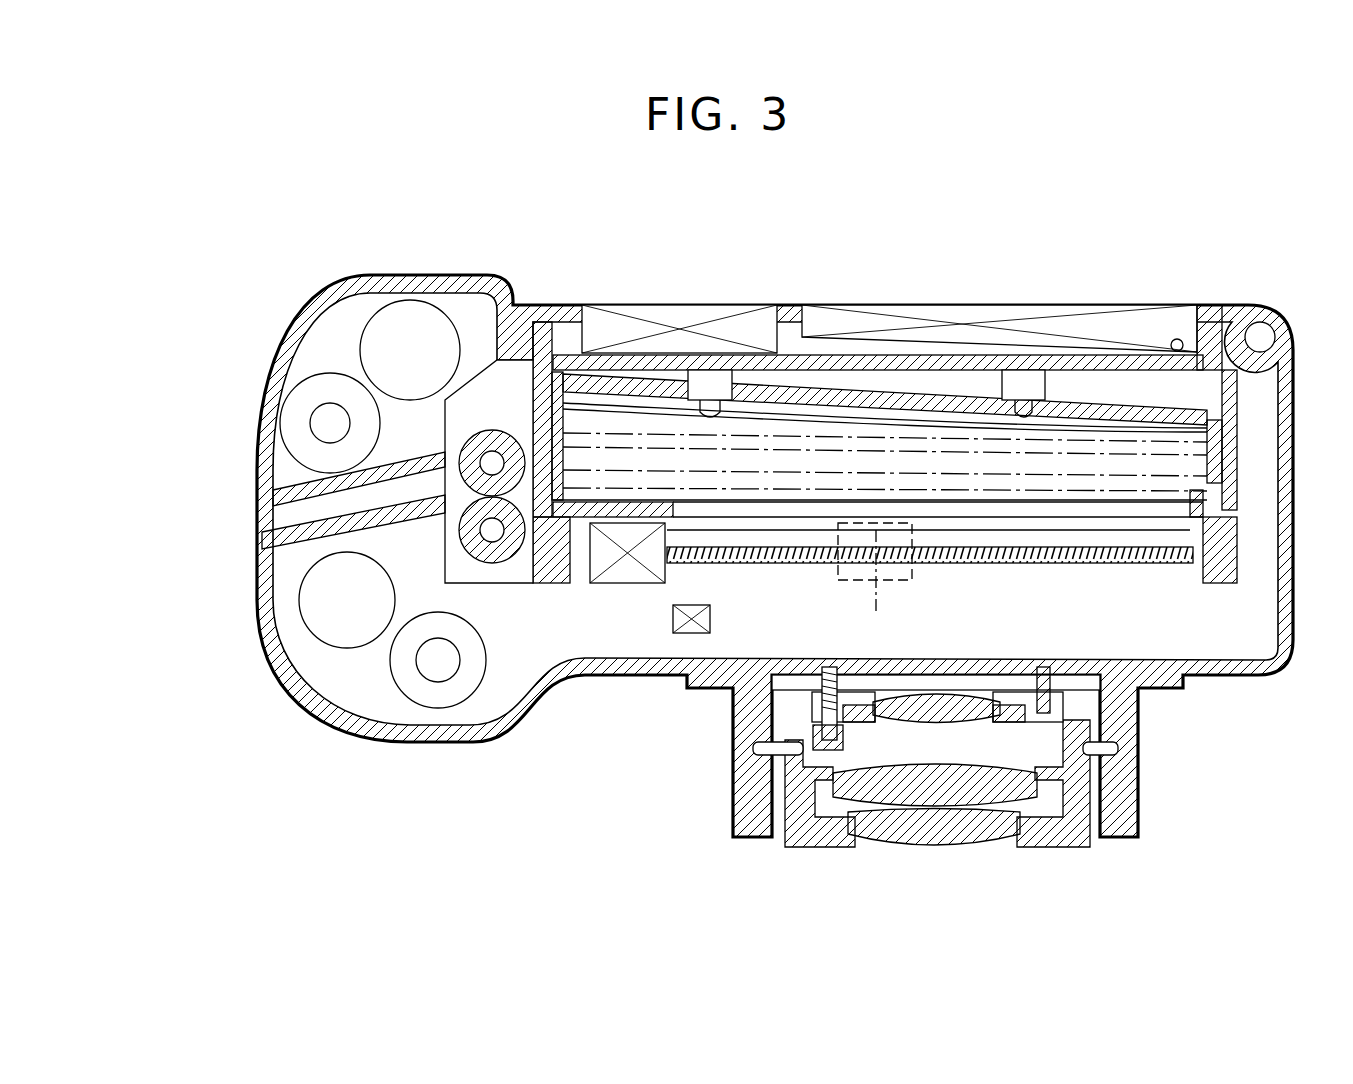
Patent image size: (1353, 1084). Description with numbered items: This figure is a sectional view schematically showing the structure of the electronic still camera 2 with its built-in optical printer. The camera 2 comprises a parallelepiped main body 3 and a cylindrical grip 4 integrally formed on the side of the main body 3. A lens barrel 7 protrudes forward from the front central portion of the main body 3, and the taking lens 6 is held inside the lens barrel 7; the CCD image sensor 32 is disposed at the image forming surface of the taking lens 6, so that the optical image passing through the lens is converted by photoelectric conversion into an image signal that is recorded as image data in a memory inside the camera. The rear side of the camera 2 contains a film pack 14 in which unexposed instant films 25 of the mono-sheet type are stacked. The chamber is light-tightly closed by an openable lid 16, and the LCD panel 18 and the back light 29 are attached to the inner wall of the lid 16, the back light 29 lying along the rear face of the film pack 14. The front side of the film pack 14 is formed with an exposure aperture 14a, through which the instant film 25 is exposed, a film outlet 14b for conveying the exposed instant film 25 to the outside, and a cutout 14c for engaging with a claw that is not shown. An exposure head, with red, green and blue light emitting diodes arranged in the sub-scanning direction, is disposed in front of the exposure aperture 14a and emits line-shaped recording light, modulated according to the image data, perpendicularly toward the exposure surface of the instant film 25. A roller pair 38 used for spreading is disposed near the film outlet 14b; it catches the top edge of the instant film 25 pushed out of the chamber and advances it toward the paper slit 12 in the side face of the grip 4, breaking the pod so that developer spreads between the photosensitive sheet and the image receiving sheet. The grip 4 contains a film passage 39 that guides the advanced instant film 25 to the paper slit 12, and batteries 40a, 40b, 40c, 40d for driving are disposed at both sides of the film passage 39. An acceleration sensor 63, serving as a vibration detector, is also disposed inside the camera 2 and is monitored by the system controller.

The electronic still camera 2 is at (542, 255).
The main body 3 is at (1271, 722).
The grip 4 is at (290, 746).
The taking lens 6 is at (957, 837).
The lens barrel 7 is at (1128, 745).
The paper slit 12 is at (270, 528).
The film pack 14 is at (852, 395).
The exposure aperture 14a is at (1098, 510).
The film outlet 14b is at (557, 533).
The cutout 14c is at (1215, 490).
The lid 16 is at (680, 305).
The LCD panel 18 is at (1005, 305).
The instant film 25 is at (782, 488).
The back light 29 is at (1148, 345).
The CCD image sensor 32 is at (948, 660).
The roller pair 38 is at (495, 442).
The film passage 39 is at (327, 515).
The battery 40a is at (410, 300).
The battery 40b is at (320, 423).
The battery 40c is at (322, 605).
The battery 40d is at (442, 693).
The acceleration sensor 63 is at (690, 635).